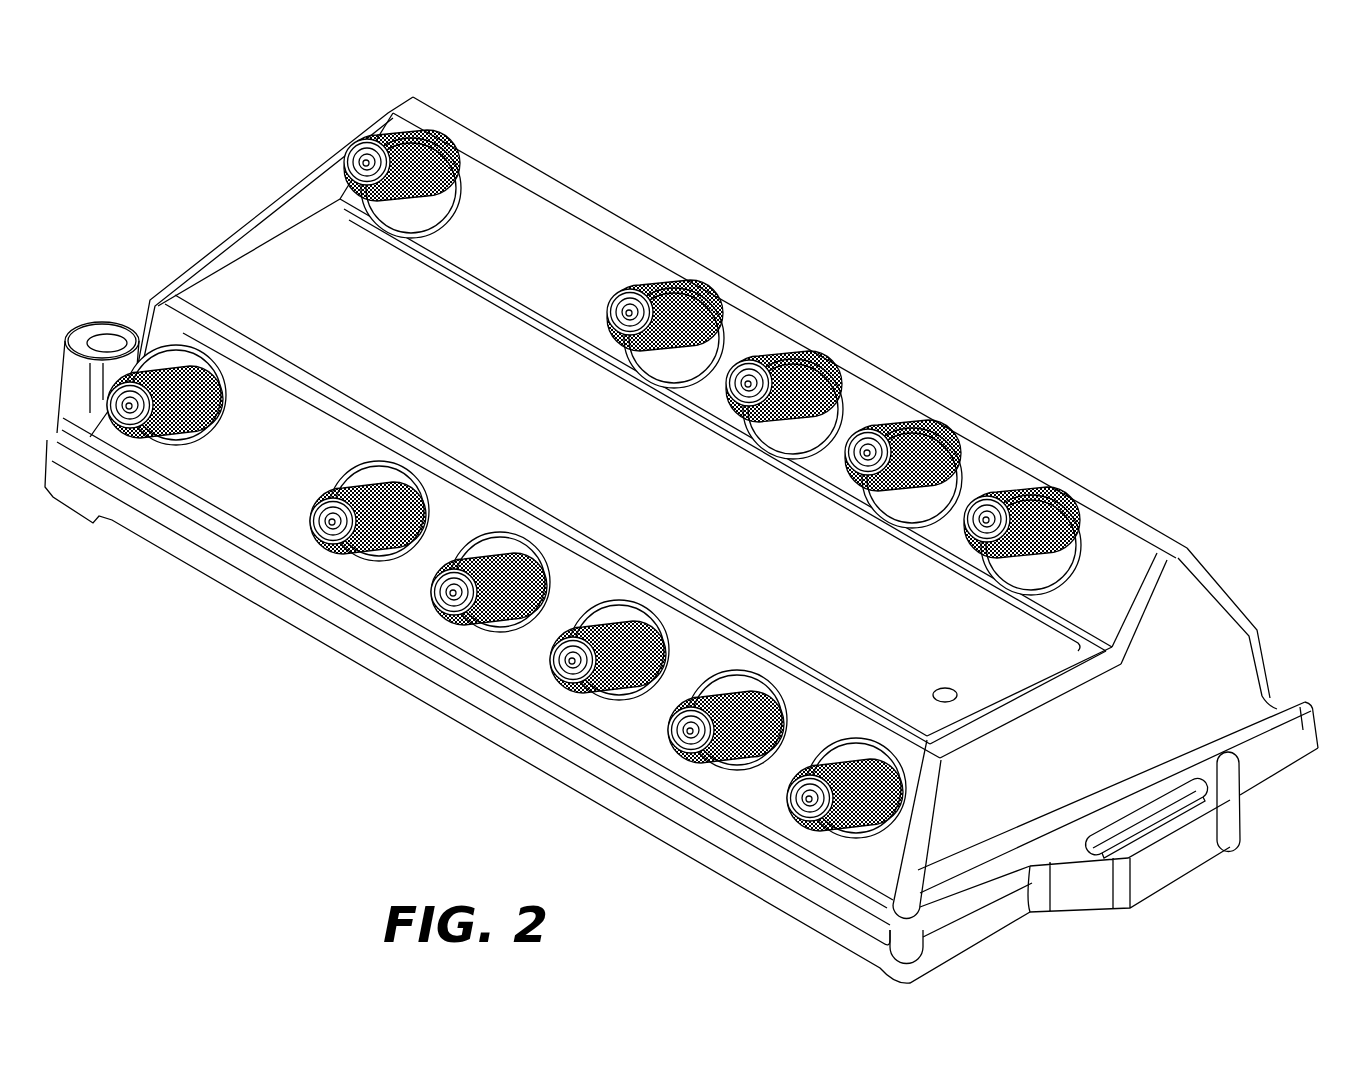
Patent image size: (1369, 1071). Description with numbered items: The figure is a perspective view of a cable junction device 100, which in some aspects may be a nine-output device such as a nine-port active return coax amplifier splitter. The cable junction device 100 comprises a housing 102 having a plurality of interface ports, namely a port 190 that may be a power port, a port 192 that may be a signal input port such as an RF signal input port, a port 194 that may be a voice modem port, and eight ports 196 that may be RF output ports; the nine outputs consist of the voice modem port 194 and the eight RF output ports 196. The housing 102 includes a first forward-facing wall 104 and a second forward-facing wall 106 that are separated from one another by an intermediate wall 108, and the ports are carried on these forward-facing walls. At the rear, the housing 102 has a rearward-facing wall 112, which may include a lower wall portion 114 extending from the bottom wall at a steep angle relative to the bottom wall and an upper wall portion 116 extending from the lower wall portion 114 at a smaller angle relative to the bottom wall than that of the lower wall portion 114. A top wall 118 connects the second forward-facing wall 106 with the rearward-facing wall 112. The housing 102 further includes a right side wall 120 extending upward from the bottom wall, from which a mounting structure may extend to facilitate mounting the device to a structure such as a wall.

The cable junction device 100 is at (1027, 190).
The housing 102 is at (1188, 590).
The first forward-facing wall 104 is at (240, 478).
The second forward-facing wall 106 is at (540, 247).
The intermediate wall 108 is at (742, 538).
The rearward-facing wall 112 is at (1258, 606).
The lower wall portion 114 is at (1265, 673).
The upper wall portion 116 is at (1212, 587).
The top wall 118 is at (607, 200).
The right side wall 120 is at (1107, 758).
The power port 190 is at (795, 822).
The signal input port 192 is at (102, 433).
The voice modem port 194 is at (345, 145).
The RF output ports 196 is at (647, 280).